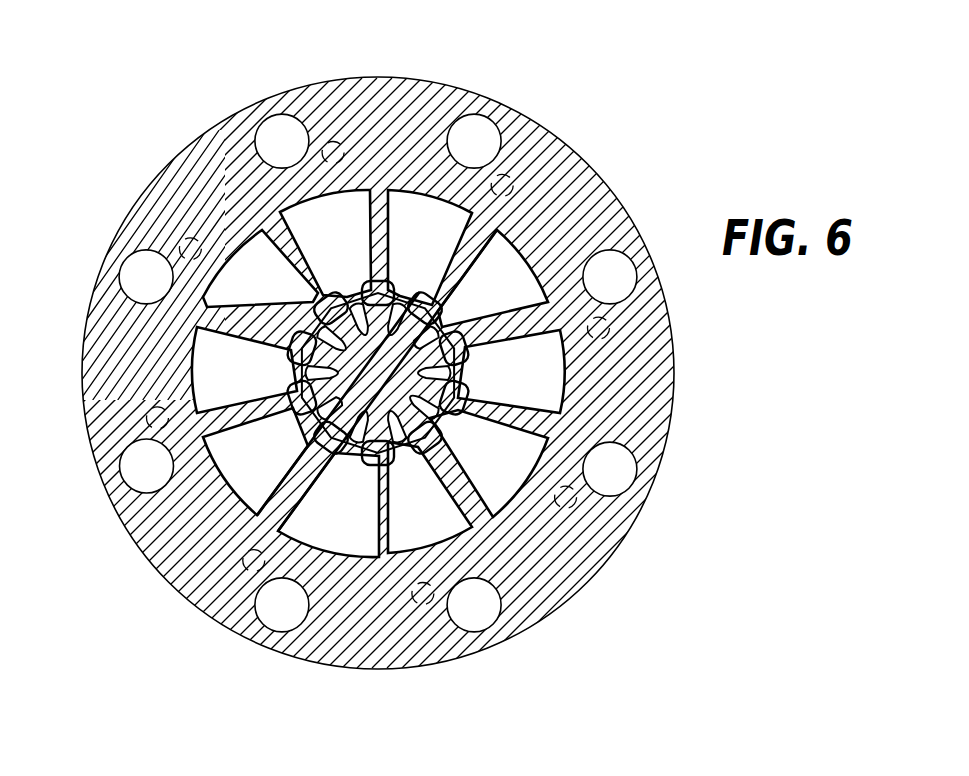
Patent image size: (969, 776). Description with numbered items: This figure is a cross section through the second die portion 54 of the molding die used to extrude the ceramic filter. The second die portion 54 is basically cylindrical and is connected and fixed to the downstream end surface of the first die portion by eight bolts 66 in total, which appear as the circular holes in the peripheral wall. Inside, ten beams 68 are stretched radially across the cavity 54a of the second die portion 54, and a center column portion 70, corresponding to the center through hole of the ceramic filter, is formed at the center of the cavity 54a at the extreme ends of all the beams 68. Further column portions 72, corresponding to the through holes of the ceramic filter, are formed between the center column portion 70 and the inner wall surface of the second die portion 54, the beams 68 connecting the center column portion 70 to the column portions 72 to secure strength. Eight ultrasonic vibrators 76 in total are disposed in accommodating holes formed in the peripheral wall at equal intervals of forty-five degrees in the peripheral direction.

The second die portion 54 is at (423, 78).
The cavity 54a is at (258, 273).
The bolts 66 is at (142, 472).
The beams 68 is at (522, 393).
The center column portion 70 is at (380, 380).
The column portions 72 is at (347, 447).
The ultrasonic vibrators 76 is at (508, 182).